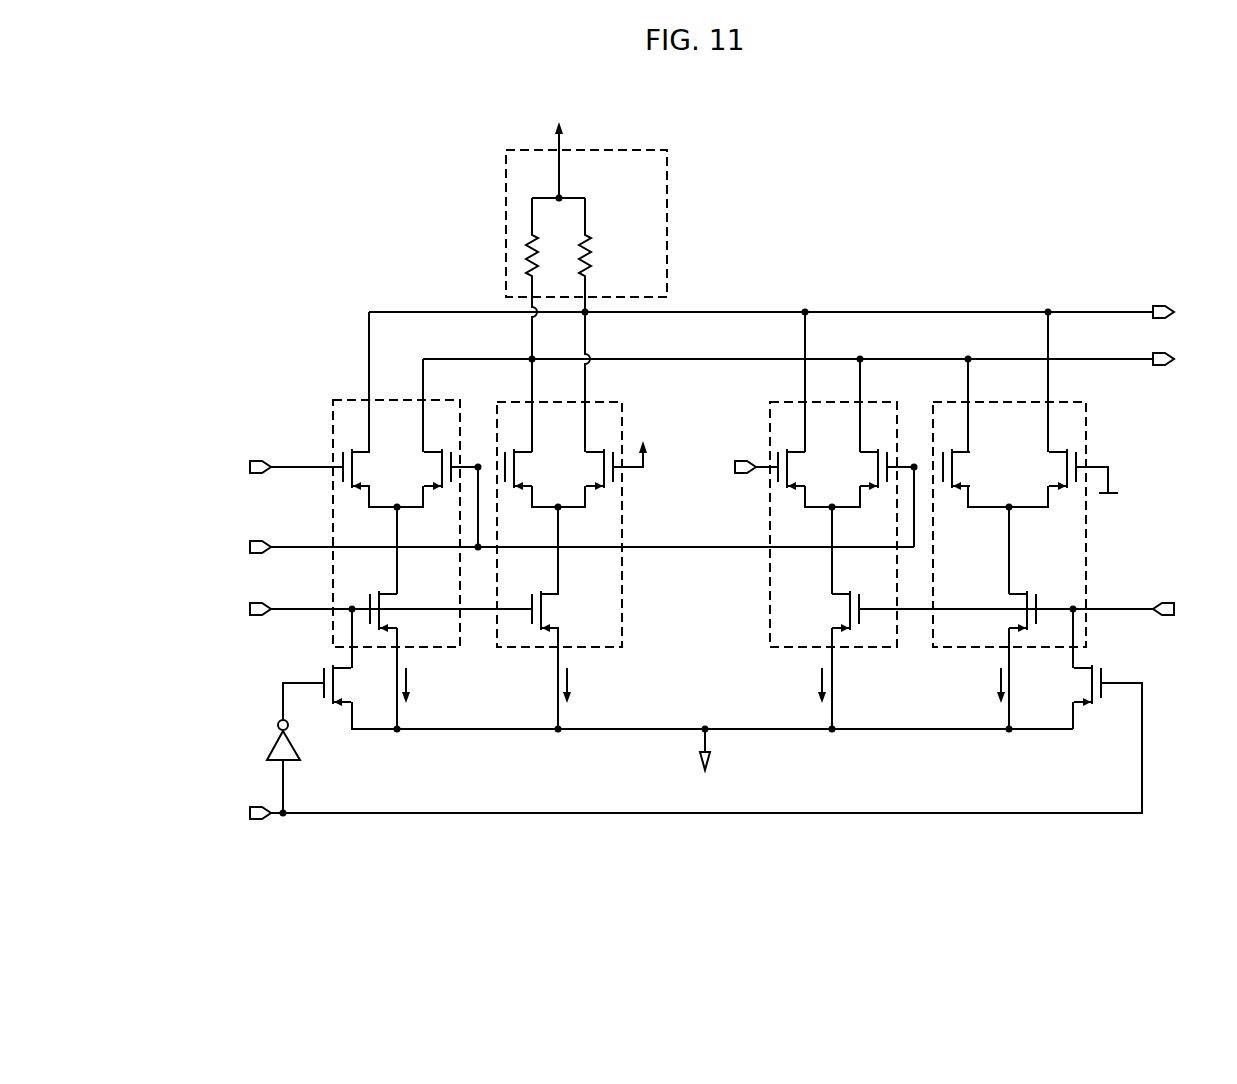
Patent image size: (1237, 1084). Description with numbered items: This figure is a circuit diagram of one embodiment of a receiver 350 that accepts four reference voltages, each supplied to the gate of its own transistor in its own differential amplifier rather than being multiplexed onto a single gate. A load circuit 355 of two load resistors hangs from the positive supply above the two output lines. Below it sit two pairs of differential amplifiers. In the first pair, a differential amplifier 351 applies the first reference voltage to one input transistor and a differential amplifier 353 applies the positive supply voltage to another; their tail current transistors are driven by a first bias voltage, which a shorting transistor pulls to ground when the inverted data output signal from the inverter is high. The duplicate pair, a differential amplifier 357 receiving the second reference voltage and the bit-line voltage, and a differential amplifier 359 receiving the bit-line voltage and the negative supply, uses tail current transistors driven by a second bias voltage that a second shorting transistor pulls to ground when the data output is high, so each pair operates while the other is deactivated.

The receiver 350 is at (712, 142).
The differential amplifier 351 is at (438, 400).
The differential amplifier 353 is at (600, 402).
The load circuit 355 is at (667, 240).
The differential amplifier 357 is at (875, 402).
The differential amplifier 359 is at (1065, 402).